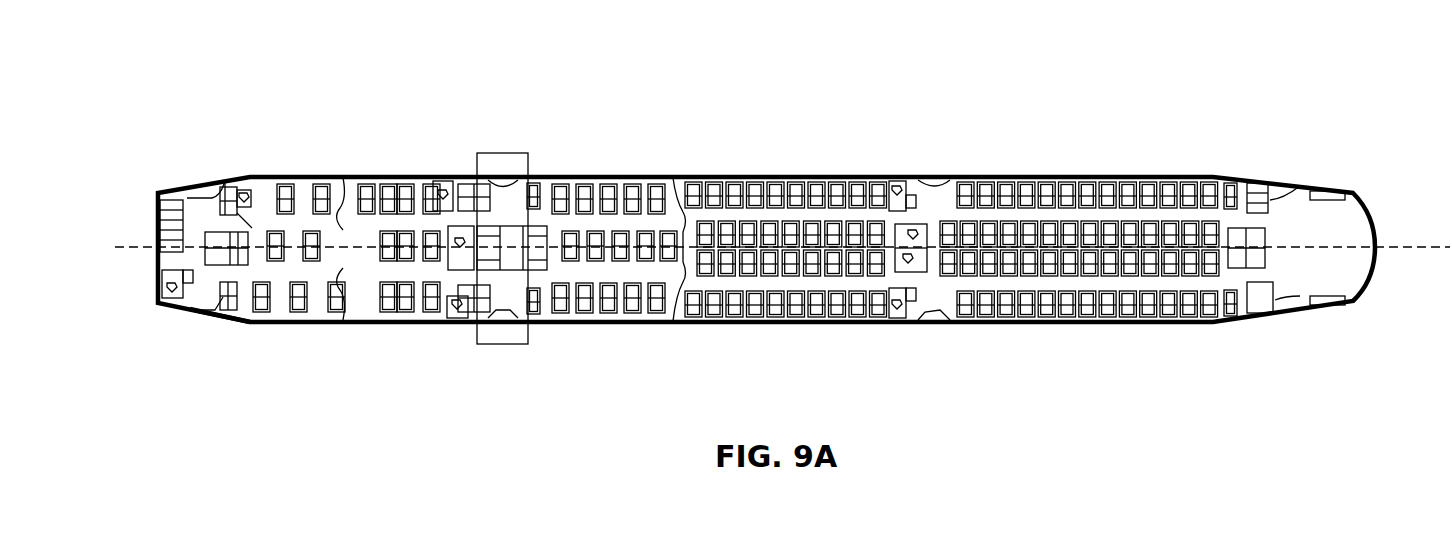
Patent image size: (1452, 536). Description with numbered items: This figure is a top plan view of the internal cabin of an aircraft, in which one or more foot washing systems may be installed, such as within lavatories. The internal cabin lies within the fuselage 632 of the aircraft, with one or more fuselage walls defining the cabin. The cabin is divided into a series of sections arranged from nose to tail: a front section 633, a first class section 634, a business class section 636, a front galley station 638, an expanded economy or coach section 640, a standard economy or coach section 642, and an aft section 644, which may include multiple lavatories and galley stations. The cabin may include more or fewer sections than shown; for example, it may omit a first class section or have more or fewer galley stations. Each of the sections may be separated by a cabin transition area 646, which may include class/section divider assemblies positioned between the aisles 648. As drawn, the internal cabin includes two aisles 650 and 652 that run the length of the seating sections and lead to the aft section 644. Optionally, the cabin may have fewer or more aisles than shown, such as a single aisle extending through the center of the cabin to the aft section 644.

The fuselage 632 is at (624, 100).
The front section 633 is at (208, 336).
The first class section 634 is at (307, 323).
The business class section 636 is at (372, 178).
The front galley station 638 is at (502, 340).
The expanded economy or coach section 640 is at (605, 323).
The standard economy or coach section 642 is at (730, 176).
The aft section 644 is at (1297, 203).
The cabin transition area 646 is at (225, 178).
The aisles 648 is at (490, 217).
The aisle 650 is at (1090, 215).
The aisle 652 is at (1108, 283).